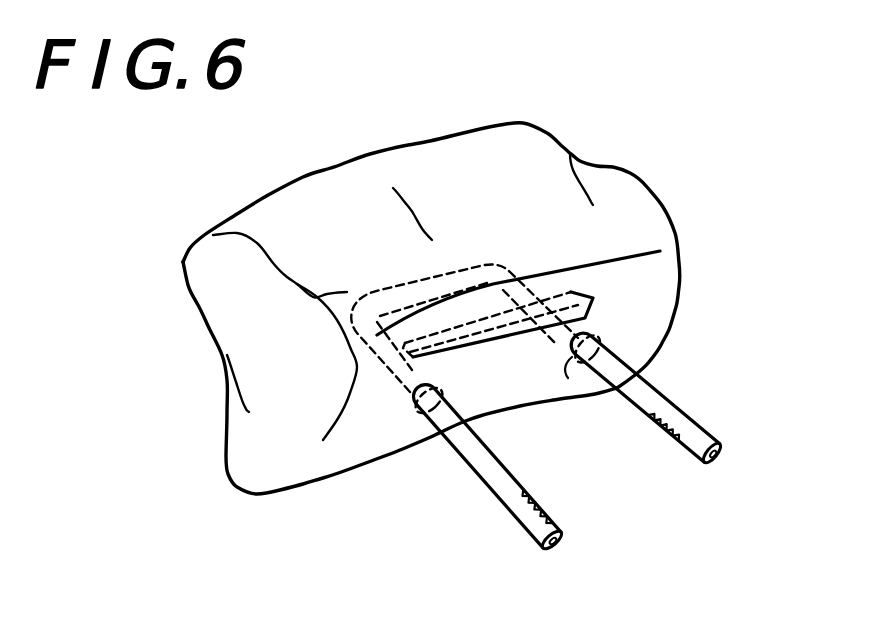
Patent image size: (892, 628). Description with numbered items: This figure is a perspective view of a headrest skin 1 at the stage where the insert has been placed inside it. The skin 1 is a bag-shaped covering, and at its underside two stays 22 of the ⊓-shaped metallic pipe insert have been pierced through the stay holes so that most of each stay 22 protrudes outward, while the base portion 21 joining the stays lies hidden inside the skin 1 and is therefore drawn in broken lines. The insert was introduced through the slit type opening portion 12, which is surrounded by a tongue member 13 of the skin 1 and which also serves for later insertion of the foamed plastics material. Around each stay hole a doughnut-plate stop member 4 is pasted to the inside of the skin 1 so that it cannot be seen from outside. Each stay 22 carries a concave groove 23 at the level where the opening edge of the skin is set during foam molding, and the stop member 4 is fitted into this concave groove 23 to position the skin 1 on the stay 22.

The skin 1 is at (495, 153).
The base portion 21 is at (390, 287).
The opening portion 12 is at (505, 340).
The tongue member 13 is at (577, 295).
The stay 22 is at (470, 473).
The stop member 4 is at (412, 405).
The concave groove 23 is at (575, 360).